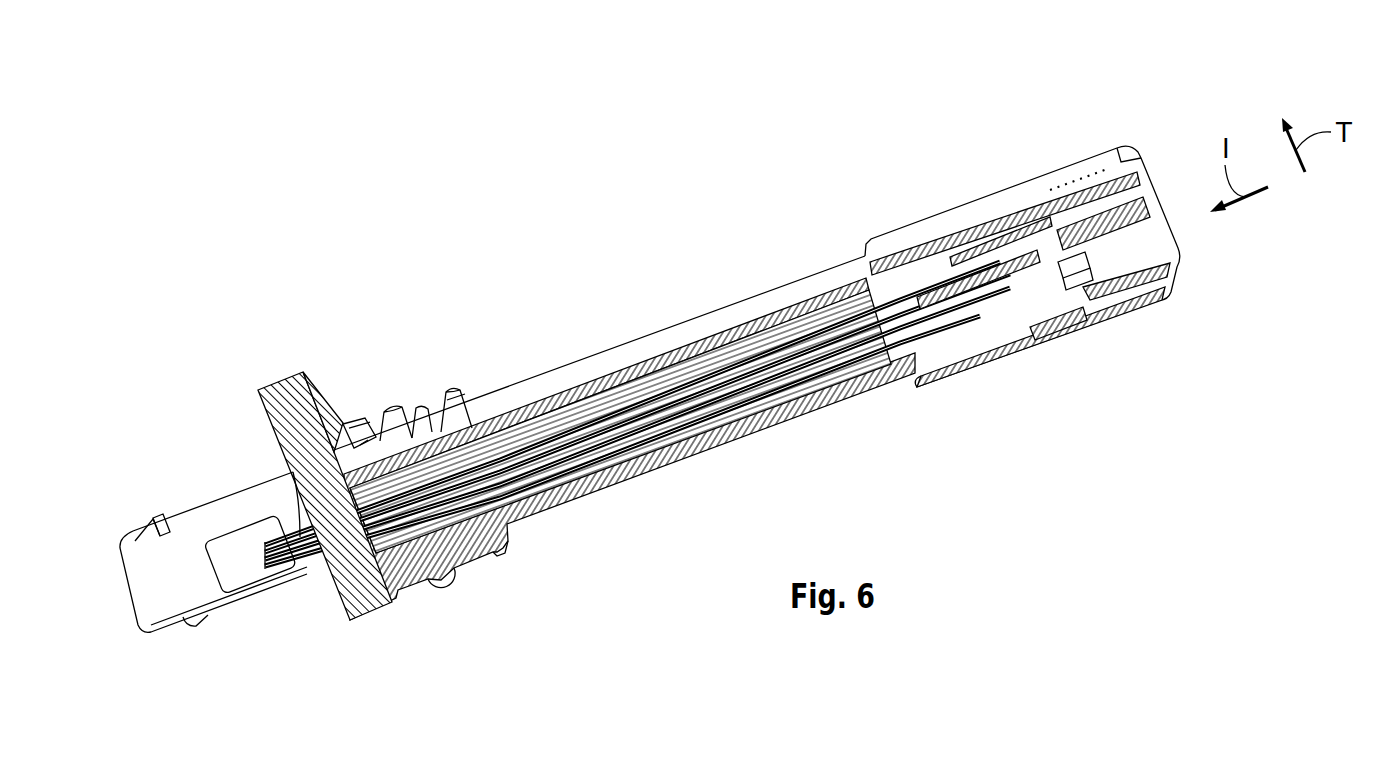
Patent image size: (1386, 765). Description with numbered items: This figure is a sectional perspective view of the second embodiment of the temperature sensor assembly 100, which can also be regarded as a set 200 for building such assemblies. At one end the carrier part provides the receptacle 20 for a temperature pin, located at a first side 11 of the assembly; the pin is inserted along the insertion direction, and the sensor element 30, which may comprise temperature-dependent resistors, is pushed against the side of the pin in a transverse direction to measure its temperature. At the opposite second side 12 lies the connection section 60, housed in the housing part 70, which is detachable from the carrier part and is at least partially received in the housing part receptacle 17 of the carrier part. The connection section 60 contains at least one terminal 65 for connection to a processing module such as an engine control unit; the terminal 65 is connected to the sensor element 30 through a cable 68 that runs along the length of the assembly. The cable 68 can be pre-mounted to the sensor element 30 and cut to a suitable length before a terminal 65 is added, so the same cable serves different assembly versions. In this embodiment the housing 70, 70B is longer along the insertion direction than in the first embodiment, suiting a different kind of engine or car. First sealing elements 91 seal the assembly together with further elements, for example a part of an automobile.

The first side 11 is at (1135, 138).
The second side 12 is at (330, 606).
The housing part receptacle 17 is at (908, 385).
The receptacle 20 is at (1039, 260).
The sensor element 30 is at (1062, 268).
The connection section 60 is at (214, 495).
The terminal 65 is at (283, 552).
The cable 68 is at (645, 405).
The housing part 70 is at (198, 493).
The housing part of the second embodiment 70B is at (251, 481).
The first sealing element 91 is at (386, 415).
The temperature sensor assembly 100 is at (630, 441).
The set 200 is at (408, 289).